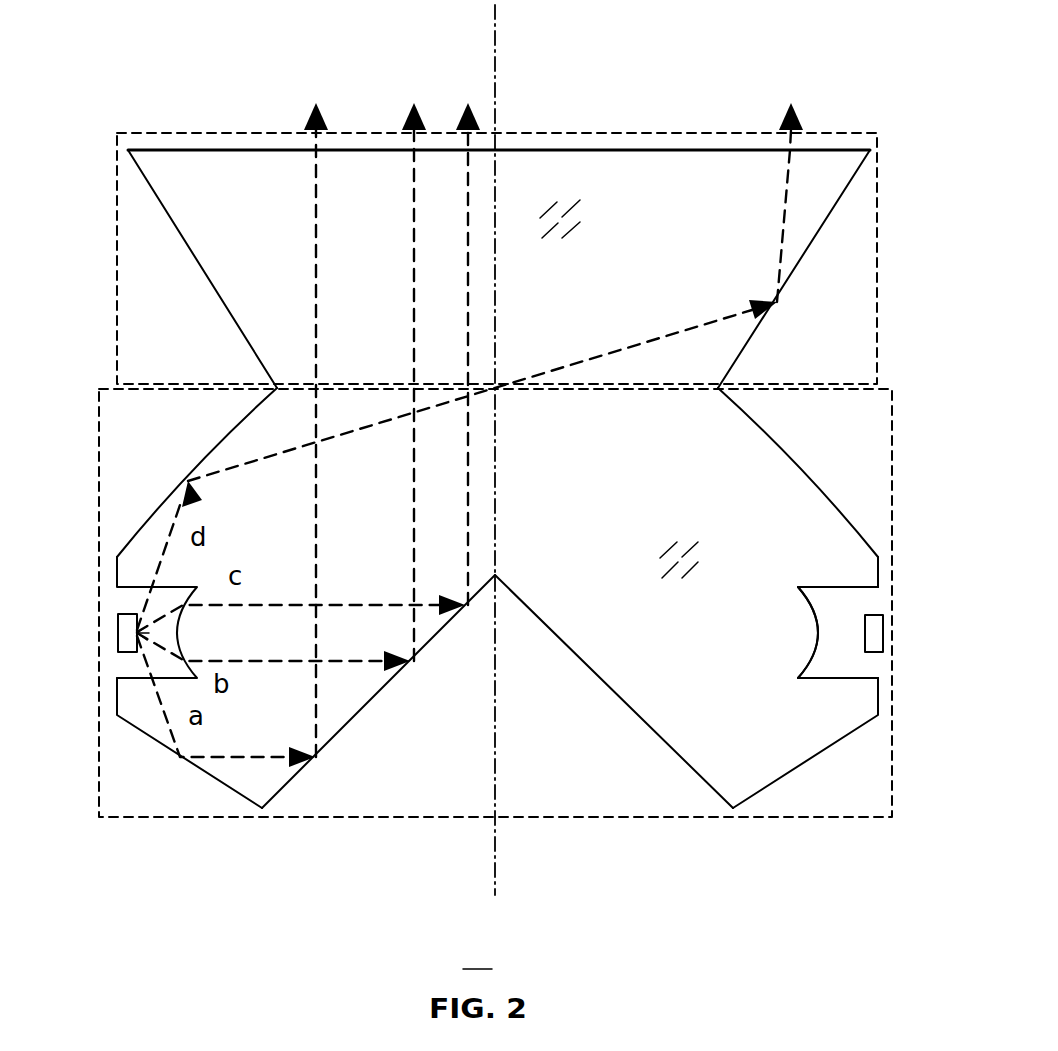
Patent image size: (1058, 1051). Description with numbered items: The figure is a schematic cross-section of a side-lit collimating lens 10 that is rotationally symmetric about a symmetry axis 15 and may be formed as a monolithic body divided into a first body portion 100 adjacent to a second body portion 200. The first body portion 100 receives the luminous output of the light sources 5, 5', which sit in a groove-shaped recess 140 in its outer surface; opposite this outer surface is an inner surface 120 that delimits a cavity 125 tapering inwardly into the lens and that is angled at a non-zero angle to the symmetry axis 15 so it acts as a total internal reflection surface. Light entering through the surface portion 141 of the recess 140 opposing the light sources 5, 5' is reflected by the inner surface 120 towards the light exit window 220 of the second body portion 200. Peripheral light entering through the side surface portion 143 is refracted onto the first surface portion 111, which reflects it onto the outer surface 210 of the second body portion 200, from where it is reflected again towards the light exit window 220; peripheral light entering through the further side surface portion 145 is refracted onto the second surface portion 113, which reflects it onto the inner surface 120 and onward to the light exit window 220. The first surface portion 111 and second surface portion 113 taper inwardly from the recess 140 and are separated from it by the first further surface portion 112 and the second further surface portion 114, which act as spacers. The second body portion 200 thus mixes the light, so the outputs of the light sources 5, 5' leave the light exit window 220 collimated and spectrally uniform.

The light source 5 is at (96, 630).
The light source 5' is at (914, 627).
The collimating lens 10 is at (477, 956).
The symmetry axis 15 is at (492, 863).
The first body portion 100 is at (820, 818).
The first surface portion 111 is at (812, 482).
The first further surface portion 112 is at (880, 557).
The second surface portion 113 is at (805, 762).
The second further surface portion 114 is at (117, 705).
The inner surface 120 is at (655, 735).
The cavity 125 is at (513, 740).
The groove-shaped recess 140 is at (837, 628).
The surface portion 141 is at (818, 632).
The side surface portion 143 is at (830, 580).
The further side surface portion 145 is at (840, 680).
The second body portion 200 is at (641, 135).
The outer surface 210 is at (170, 221).
The light exit window 220 is at (566, 147).